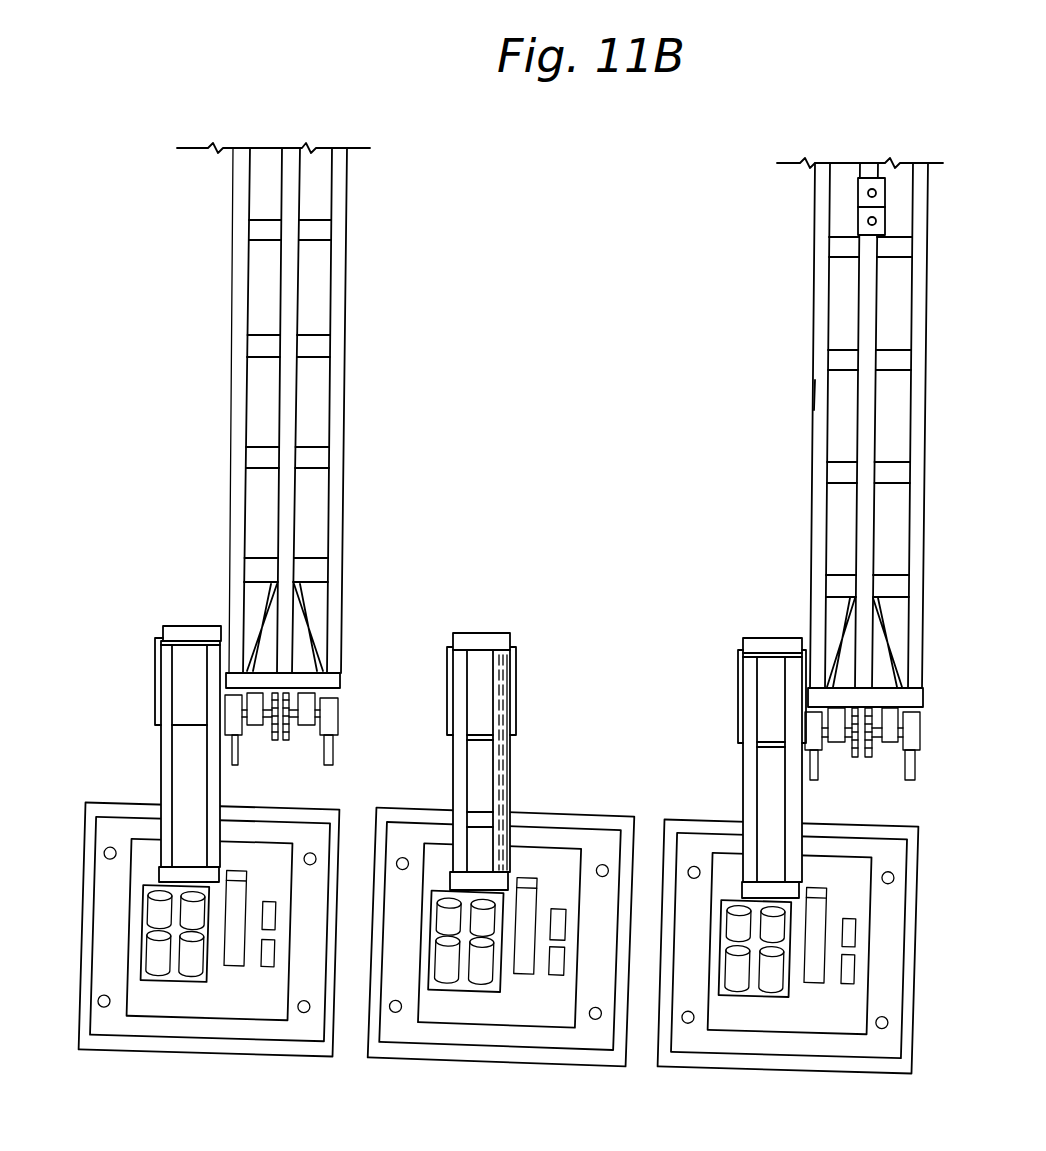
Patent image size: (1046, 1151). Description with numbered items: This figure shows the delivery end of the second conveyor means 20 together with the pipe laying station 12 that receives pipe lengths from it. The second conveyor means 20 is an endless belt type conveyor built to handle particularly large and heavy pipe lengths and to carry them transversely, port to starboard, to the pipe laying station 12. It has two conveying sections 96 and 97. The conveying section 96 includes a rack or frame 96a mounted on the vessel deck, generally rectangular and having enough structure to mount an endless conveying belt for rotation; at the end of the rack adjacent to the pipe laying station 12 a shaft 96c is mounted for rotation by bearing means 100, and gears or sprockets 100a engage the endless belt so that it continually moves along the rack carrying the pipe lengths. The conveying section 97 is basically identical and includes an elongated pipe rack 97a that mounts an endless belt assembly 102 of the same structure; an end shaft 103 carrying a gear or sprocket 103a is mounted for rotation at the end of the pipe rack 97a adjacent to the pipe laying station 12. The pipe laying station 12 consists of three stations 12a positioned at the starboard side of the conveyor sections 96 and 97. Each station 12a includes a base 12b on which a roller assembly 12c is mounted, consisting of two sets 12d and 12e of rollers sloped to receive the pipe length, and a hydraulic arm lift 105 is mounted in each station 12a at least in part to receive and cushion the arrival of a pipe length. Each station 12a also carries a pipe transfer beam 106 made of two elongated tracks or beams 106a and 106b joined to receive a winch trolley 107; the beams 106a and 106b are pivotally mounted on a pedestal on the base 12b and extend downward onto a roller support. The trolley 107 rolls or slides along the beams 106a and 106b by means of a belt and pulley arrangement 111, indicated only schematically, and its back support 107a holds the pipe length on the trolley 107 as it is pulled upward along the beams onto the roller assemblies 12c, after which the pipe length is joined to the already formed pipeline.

The pipe laying station 12 is at (522, 1066).
The pipe laying stations 12a is at (235, 1054).
The base 12b is at (120, 1046).
The roller assembly 12c is at (145, 948).
The set of rollers 12d is at (192, 974).
The set of rollers 12e is at (147, 908).
The second conveyor means 20 is at (350, 283).
The conveying section 96 is at (348, 207).
The rack or frame 96a is at (238, 320).
The shaft 96c is at (293, 727).
The conveying section 97 is at (820, 295).
The elongated pipe rack 97a is at (822, 397).
The bearing means 100 is at (338, 708).
The gears or sprockets 100a is at (274, 741).
The endless belt assembly 102 is at (858, 182).
The end shaft 103 is at (847, 742).
The gear or sprocket 103a is at (870, 757).
The hydraulic arm lift 105 is at (235, 962).
The pipe transfer beam 106 is at (512, 713).
The elongated track or beam 106a is at (511, 753).
The elongated track or beam 106b is at (453, 752).
The winch trolley 107 is at (517, 658).
The back support 107a is at (483, 638).
The belt and pulley arrangement 111 is at (513, 782).